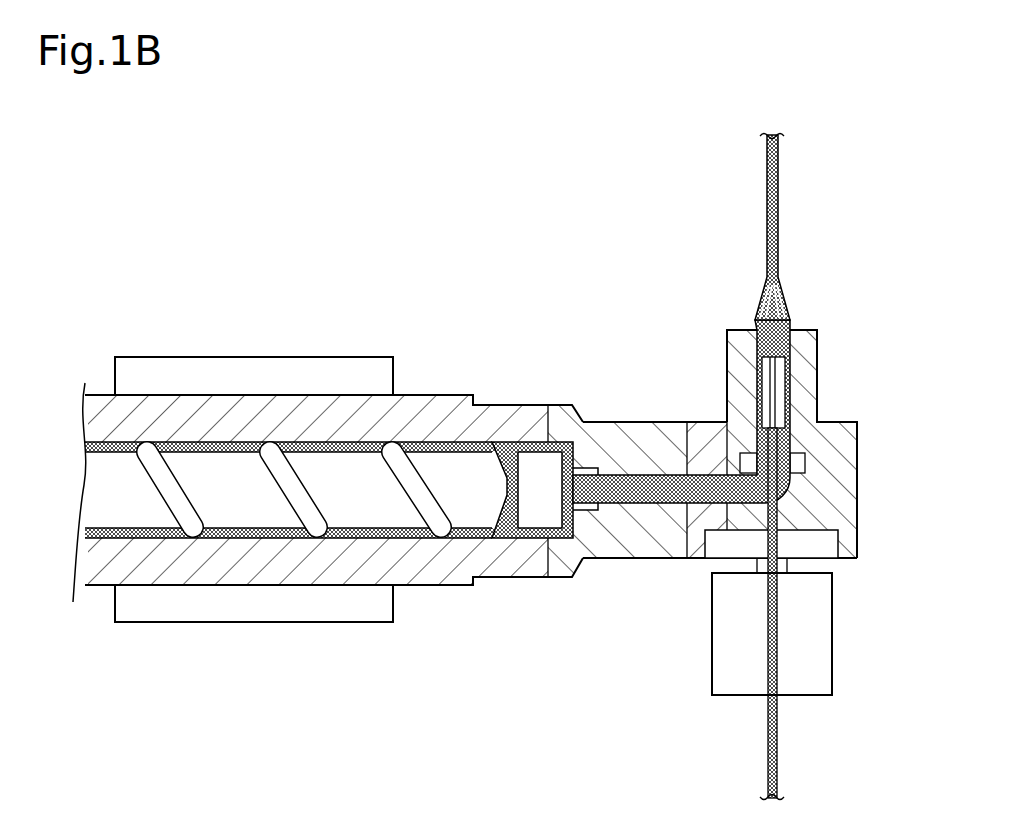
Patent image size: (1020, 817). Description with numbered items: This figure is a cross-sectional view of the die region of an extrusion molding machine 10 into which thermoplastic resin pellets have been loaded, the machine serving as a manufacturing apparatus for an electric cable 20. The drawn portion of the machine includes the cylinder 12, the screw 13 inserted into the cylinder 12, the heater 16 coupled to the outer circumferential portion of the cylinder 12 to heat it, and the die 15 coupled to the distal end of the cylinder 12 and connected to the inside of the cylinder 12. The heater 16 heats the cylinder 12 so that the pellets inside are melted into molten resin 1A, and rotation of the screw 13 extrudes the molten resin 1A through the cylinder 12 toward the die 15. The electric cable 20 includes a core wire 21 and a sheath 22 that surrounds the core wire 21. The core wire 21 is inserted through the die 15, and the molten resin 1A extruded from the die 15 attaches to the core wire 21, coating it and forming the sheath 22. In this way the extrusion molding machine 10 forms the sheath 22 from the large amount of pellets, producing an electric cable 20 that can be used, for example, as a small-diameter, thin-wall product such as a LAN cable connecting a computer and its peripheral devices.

The extrusion molding machine 10 is at (510, 408).
The cylinder 12 is at (97, 588).
The screw 13 is at (193, 463).
The heater 16 is at (252, 613).
The molten resin 1A is at (635, 483).
The die 15 is at (857, 478).
The electric cable 20 is at (788, 464).
The core wire 21 is at (777, 740).
The sheath 22 is at (778, 218).